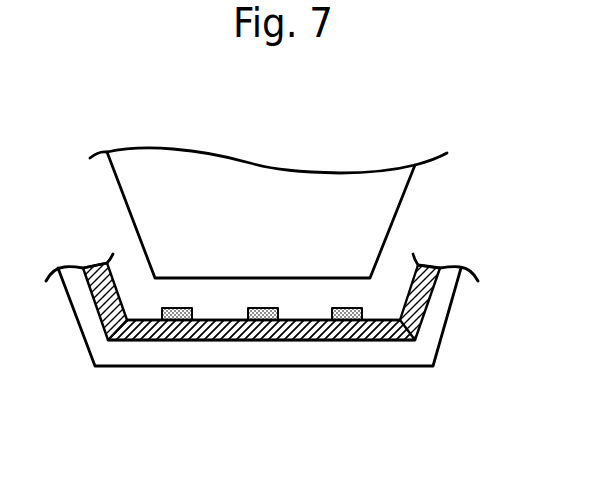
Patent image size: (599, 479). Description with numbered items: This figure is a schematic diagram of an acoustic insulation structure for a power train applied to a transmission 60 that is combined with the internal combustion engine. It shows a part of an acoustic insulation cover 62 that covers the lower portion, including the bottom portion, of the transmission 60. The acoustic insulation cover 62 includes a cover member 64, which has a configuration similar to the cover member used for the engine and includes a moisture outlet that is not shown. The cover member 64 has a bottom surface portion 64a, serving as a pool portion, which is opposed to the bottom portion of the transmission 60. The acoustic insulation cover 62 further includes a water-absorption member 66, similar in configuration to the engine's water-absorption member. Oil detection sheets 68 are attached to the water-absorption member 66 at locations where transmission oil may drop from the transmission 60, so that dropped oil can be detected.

The transmission 60 is at (381, 208).
The acoustic insulation cover 62 is at (473, 377).
The cover member 64 is at (368, 374).
The bottom surface portion 64a is at (290, 353).
The water-absorption member 66 is at (182, 343).
The oil detection sheets 68 is at (168, 320).